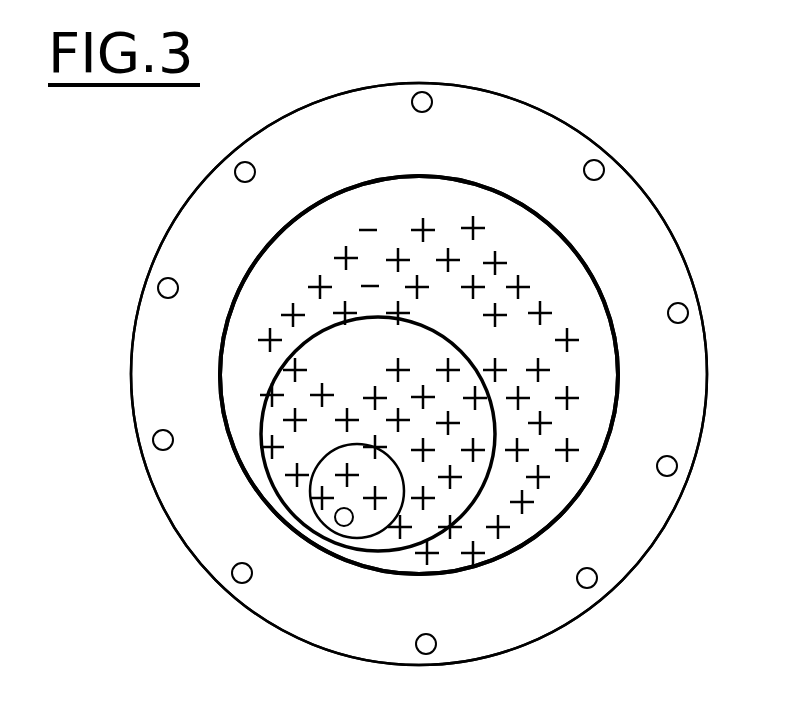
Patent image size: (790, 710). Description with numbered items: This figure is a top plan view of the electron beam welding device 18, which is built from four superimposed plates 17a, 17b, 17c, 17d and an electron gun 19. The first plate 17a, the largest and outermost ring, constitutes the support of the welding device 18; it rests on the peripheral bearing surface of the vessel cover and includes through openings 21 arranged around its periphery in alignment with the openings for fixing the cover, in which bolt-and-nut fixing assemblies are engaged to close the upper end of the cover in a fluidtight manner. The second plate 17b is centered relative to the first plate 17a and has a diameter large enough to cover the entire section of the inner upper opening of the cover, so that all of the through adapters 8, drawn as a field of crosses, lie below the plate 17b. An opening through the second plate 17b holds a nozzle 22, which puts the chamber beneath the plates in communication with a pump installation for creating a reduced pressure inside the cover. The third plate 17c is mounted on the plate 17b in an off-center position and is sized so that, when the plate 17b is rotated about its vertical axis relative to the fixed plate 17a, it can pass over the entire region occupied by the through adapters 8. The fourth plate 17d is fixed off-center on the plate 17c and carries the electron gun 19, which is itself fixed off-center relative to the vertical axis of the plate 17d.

The welding device 18 is at (401, 66).
The first plate 17a is at (205, 212).
The second plate 17b is at (238, 342).
The third plate 17c is at (262, 417).
The fourth plate 17d is at (367, 527).
The electron gun 19 is at (343, 526).
The through openings 21 is at (431, 103).
The nozzle 22 is at (493, 212).
The through adapters 8 is at (570, 452).